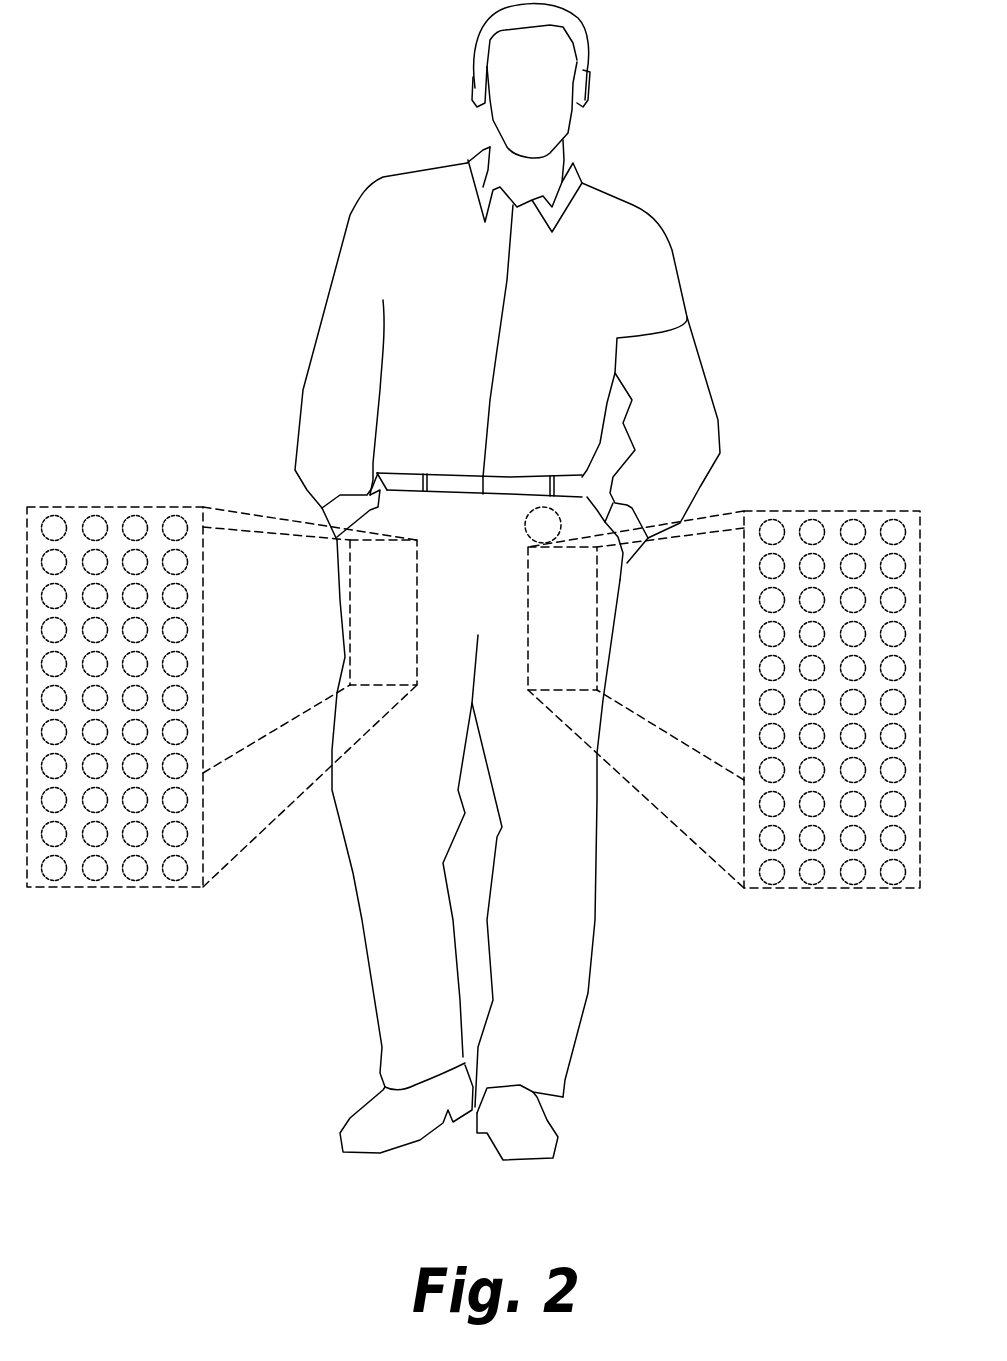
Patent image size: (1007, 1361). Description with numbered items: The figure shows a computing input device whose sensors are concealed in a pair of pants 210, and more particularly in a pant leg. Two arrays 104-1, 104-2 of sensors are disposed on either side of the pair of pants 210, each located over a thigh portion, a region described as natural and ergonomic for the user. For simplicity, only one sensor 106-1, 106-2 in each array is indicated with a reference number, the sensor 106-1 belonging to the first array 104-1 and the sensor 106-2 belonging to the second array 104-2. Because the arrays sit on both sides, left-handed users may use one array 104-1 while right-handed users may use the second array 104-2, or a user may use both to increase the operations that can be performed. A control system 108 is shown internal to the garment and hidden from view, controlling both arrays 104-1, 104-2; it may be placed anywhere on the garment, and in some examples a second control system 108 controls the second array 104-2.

The array 104-1 is at (832, 724).
The second array 104-2 is at (115, 723).
The sensor 106-1 is at (817, 532).
The sensor 106-2 is at (128, 527).
The control system 108 is at (561, 524).
The pair of pants 210 is at (573, 780).